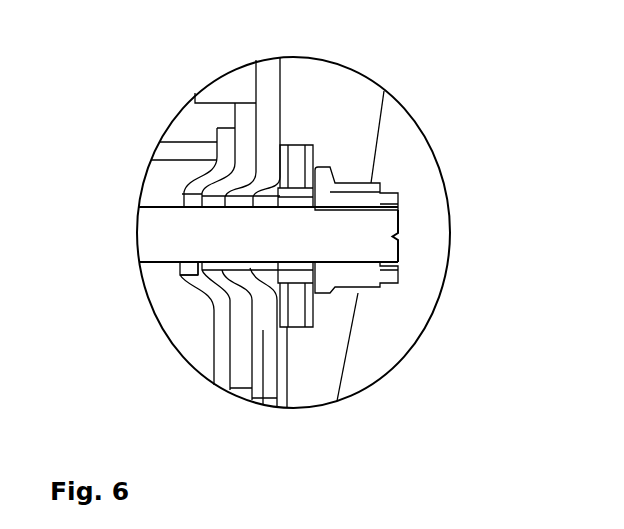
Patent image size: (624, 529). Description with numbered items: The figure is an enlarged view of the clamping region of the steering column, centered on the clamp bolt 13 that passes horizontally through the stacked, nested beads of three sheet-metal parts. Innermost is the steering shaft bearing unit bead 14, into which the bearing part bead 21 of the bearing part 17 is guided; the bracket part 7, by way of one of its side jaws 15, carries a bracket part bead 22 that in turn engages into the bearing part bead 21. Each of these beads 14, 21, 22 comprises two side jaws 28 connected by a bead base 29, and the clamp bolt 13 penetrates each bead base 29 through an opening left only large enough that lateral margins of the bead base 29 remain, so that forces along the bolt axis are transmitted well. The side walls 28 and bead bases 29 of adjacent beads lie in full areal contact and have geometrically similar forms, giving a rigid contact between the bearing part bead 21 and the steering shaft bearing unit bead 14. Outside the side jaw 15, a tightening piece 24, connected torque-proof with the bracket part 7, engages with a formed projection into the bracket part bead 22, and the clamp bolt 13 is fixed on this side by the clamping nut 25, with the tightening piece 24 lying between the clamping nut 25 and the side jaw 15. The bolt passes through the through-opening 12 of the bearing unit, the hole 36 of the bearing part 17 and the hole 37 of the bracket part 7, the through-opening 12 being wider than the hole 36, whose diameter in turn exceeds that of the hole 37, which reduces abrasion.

The bracket part 7 is at (293, 204).
The through-opening 12 is at (178, 281).
The clamp bolt 13 is at (176, 230).
The steering shaft bearing unit bead 14 is at (200, 288).
The side jaw 15 is at (267, 117).
The bearing part 17 is at (241, 396).
The bearing part bead 21 is at (265, 402).
The bracket part bead 22 is at (353, 378).
The tightening piece 24 is at (428, 225).
The clamping nut 25 is at (362, 196).
The side jaw of bead 28 is at (244, 188).
The bead base 29 is at (200, 178).
The hole 36 is at (204, 299).
The hole 37 is at (292, 168).